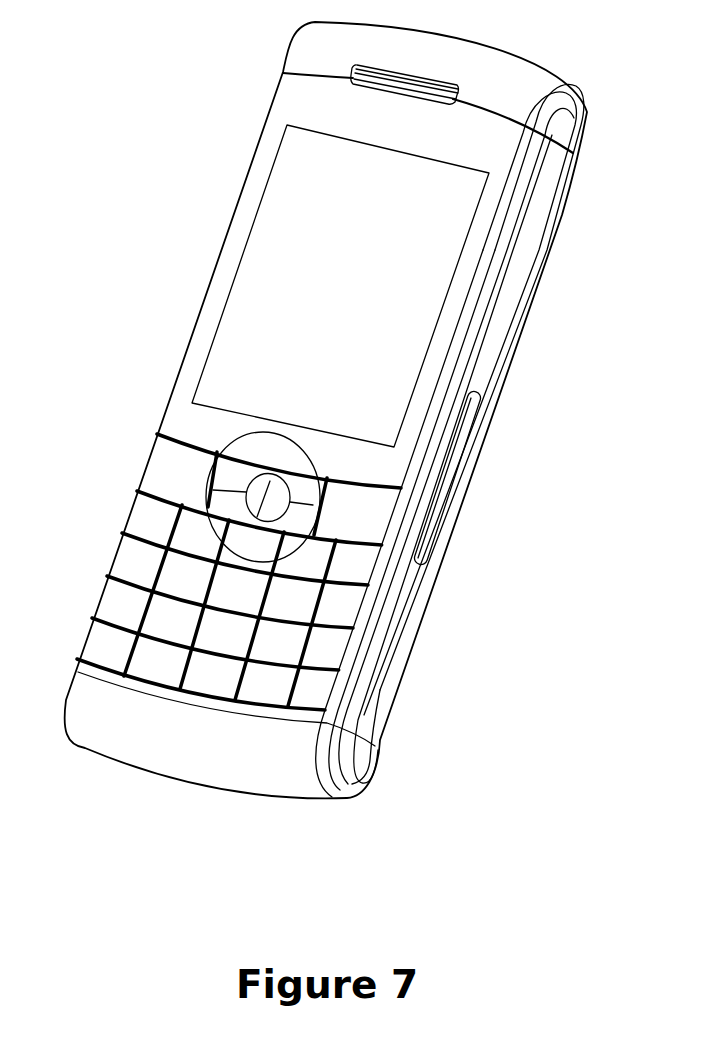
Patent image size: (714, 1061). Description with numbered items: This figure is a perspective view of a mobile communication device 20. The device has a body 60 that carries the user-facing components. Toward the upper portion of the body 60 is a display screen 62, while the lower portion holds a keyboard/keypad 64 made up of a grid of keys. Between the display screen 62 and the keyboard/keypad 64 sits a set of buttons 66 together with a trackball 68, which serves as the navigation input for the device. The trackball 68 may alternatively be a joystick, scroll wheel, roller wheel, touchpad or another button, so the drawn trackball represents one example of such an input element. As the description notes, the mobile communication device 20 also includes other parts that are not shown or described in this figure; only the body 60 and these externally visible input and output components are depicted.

The mobile communication device 20 is at (133, 228).
The body 60 is at (512, 290).
The display screen 62 is at (352, 281).
The keyboard/keypad 64 is at (330, 618).
The set of buttons 66 is at (163, 472).
The trackball 68 is at (272, 500).